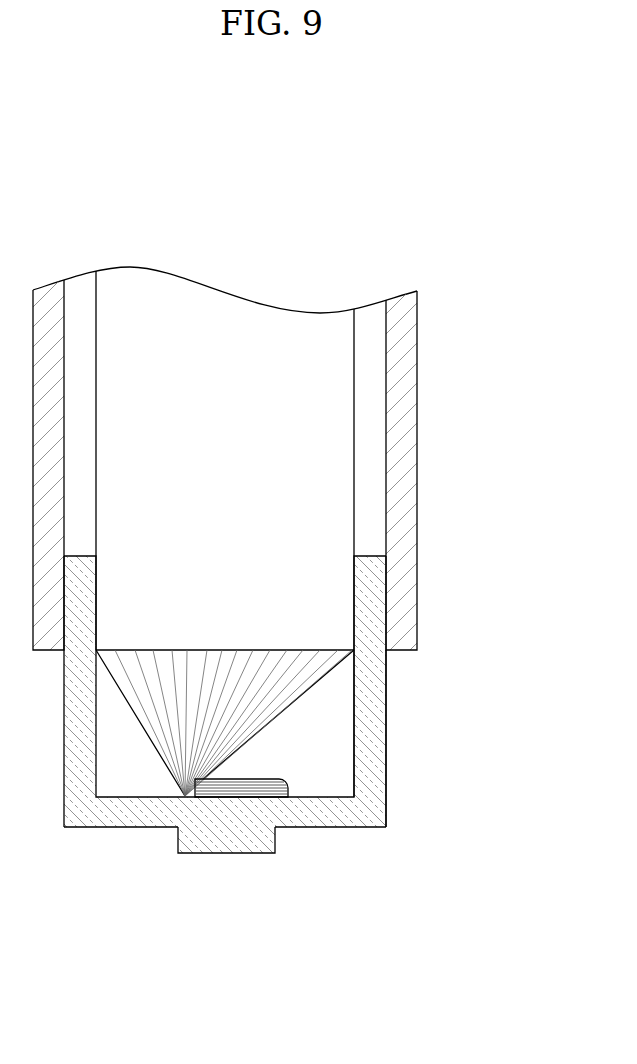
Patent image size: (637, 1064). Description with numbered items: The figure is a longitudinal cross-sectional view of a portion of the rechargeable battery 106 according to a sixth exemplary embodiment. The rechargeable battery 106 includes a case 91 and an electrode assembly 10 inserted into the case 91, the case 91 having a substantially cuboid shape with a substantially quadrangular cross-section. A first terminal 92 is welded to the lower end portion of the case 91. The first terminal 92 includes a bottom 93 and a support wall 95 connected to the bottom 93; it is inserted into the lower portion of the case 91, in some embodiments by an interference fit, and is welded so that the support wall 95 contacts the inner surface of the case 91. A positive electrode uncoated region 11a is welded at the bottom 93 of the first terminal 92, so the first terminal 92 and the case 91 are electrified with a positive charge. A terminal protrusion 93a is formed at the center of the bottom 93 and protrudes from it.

The rechargeable battery 106 is at (259, 200).
The electrode assembly 10 is at (368, 412).
The case 91 is at (405, 598).
The first terminal 92 is at (400, 678).
The bottom 93 is at (323, 815).
The terminal protrusion 93a is at (232, 853).
The support wall 95 is at (372, 773).
The positive electrode uncoated region 11a is at (267, 711).